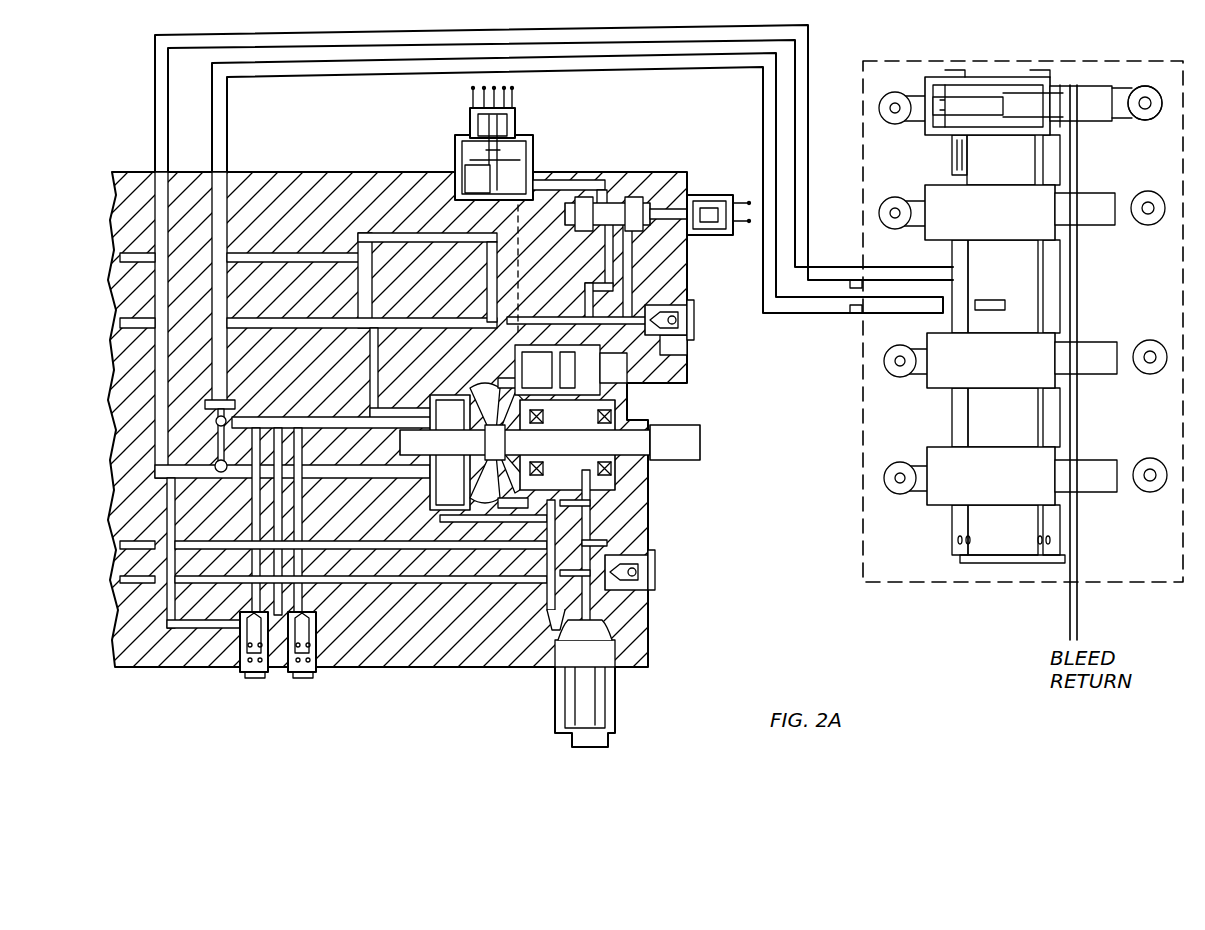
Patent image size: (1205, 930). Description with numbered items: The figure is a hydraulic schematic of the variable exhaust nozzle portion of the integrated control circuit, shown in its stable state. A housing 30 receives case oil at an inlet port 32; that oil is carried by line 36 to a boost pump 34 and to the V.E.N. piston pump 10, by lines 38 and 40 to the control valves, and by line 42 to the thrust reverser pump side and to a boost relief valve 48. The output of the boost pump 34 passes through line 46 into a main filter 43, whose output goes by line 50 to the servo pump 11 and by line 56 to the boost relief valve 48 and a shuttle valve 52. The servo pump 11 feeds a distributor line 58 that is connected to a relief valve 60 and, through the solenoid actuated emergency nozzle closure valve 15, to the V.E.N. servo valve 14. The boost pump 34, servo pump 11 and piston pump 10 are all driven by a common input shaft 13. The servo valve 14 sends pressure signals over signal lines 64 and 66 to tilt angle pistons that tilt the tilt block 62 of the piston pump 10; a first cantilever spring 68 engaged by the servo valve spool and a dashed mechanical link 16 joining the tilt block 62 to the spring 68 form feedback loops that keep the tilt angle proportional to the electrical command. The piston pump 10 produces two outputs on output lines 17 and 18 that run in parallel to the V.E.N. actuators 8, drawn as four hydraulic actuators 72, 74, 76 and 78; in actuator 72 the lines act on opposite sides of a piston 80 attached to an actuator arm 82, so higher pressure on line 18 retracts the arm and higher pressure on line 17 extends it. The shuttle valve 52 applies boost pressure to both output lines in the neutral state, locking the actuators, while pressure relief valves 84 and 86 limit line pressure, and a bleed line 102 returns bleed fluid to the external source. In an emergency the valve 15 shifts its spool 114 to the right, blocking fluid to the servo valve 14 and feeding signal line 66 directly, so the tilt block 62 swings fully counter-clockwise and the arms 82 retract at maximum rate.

The V.E.N. actuators 8 is at (1012, 60).
The V.E.N. piston pump 10 is at (448, 485).
The servo pump 11 is at (563, 462).
The common input shaft 13 is at (700, 436).
The V.E.N. servo valve 14 is at (516, 118).
The emergency nozzle closure valve 15 is at (722, 194).
The mechanical link 16 is at (510, 208).
The output line 17 is at (168, 370).
The output line 18 is at (228, 377).
The housing 30 is at (300, 176).
The inlet port 32 is at (683, 335).
The boost pump 34 is at (557, 397).
The line 36 is at (627, 375).
The line 38 is at (325, 237).
The line 40 is at (487, 298).
The line 42 is at (355, 522).
The main filter 43 is at (613, 710).
The line 46 is at (547, 595).
The boost relief valve 48 is at (633, 555).
The line 50 is at (592, 519).
The shuttle valve 52 is at (218, 434).
The line 56 is at (440, 583).
The distributor line 58 is at (325, 302).
The relief valve 60 is at (694, 315).
The tilt block 62 is at (490, 495).
The signal line 64 is at (370, 383).
The signal line 66 is at (605, 262).
The first cantilever spring 68 is at (470, 177).
The variable exhaust nozzle actuator 72 is at (903, 125).
The hydraulic actuator 74 is at (918, 230).
The hydraulic actuator 76 is at (915, 376).
The hydraulic actuator 78 is at (915, 500).
The piston 80 is at (990, 128).
The actuator arm 82 is at (1130, 118).
The pressure relief valve 84 is at (240, 649).
The pressure relief valve 86 is at (316, 635).
The bleed line 102 is at (1078, 322).
The spool 114 is at (616, 196).